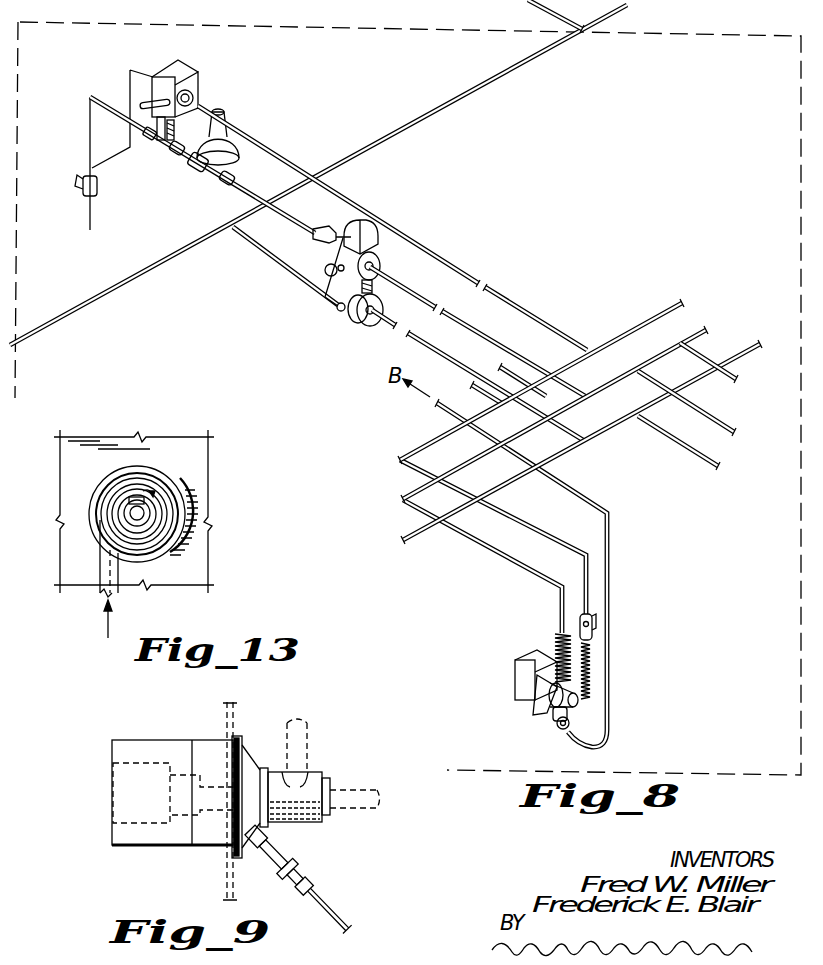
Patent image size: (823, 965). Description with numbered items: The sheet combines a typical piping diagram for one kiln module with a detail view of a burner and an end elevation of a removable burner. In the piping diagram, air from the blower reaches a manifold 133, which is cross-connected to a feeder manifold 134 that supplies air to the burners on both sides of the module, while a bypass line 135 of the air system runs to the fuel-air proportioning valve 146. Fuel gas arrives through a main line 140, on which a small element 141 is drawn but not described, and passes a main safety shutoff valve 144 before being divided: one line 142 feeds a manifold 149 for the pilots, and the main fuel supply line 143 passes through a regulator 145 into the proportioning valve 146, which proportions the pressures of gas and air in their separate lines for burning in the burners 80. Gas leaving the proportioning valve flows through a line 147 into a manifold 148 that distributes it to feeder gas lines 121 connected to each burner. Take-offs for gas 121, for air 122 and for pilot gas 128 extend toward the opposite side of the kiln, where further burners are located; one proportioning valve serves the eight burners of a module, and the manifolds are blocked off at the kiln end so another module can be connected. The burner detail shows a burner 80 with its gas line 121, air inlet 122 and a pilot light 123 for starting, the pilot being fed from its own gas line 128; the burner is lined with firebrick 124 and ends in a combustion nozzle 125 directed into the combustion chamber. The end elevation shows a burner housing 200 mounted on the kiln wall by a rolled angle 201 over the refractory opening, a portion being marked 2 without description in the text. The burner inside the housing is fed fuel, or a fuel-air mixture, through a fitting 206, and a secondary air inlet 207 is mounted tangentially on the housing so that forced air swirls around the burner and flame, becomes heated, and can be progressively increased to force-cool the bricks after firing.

In FIG. 8, the manifold 133 is at (425, 118).
In FIG. 8, the bypass line 135 is at (292, 264).
In FIG. 8, the main line 140 is at (93, 220).
In FIG. 8, the clamp fitting 141 is at (100, 190).
In FIG. 8, the line 142 is at (347, 198).
In FIG. 8, the main fuel supply line 143 is at (105, 75).
In FIG. 8, the safety shutoff valve 144 is at (200, 70).
In FIG. 8, the regulator 145 is at (240, 140).
In FIG. 8, the fuel-air proportioning valve 146 is at (390, 250).
In FIG. 8, the line 147 is at (465, 322).
In FIG. 8, the manifold 148 is at (614, 378).
In FIG. 8, the manifold 149 is at (603, 345).
In FIG. 8, the feeder manifold 134 is at (647, 408).
In FIG. 9, the gas line 128 is at (327, 912).
In FIG. 9, the gas line 121 is at (360, 788).
In FIG. 9, the air inlet 122 is at (310, 737).
In FIG. 8, the burner 80 is at (513, 698).
In FIG. 9, the burner 80 is at (250, 737).
In FIG. 8, the pilot light 123 is at (553, 719).
In FIG. 9, the pilot light 123 is at (278, 860).
In FIG. 9, the firebrick 124 is at (153, 833).
In FIG. 9, the combustion nozzle 125 is at (130, 822).
In FIG. 13, the roll 2 is at (188, 473).
In FIG. 13, the burner housing 200 is at (105, 517).
In FIG. 13, the rolled angle 201 is at (177, 487).
In FIG. 13, the fitting 206 is at (127, 502).
In FIG. 13, the secondary air inlet 207 is at (103, 567).